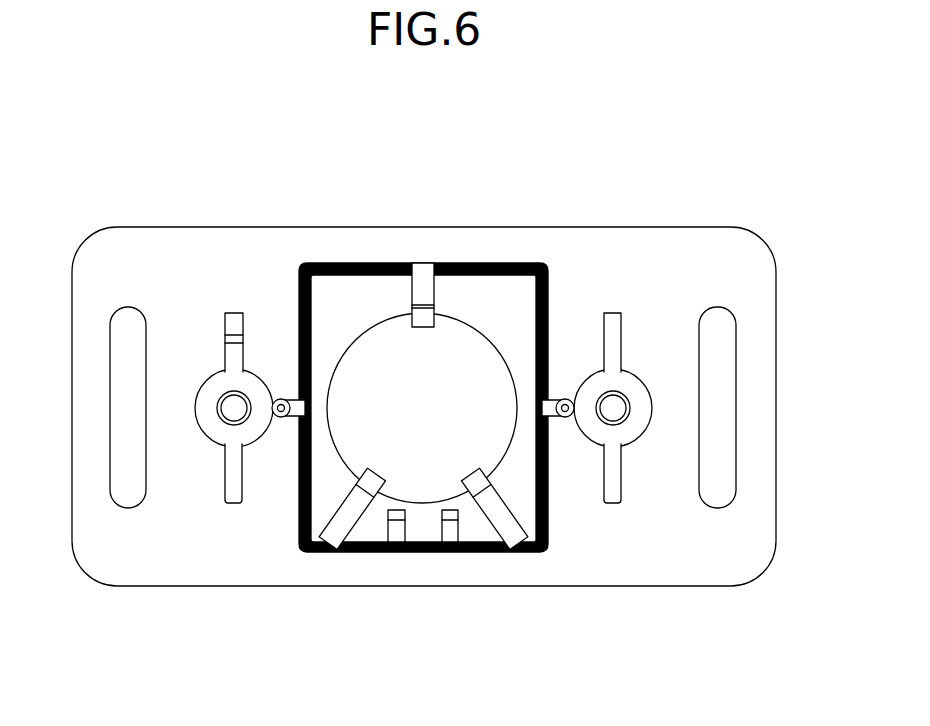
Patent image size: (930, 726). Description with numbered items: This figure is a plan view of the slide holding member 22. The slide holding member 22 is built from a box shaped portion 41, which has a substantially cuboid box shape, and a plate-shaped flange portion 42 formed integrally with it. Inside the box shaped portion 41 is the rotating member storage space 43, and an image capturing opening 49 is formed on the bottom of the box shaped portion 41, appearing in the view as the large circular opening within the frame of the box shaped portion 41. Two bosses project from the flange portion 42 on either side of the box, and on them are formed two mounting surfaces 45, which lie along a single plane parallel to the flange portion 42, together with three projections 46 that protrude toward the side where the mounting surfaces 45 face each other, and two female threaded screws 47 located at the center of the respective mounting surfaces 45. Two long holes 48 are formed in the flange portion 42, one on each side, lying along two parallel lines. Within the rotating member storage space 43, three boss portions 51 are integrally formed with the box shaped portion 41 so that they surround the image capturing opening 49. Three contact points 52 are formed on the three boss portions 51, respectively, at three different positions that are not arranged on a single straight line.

The slide holding member 22 is at (587, 130).
The box shaped portion 41 is at (312, 506).
The flange portion 42 is at (145, 227).
The rotating member storage space 43 is at (497, 282).
The mounting surfaces 45 is at (225, 355).
The projections 46 is at (234, 312).
The female threaded screws 47 is at (232, 408).
The long holes 48 is at (120, 473).
The image capturing opening 49 is at (378, 350).
The boss portions 51 is at (413, 287).
The contact points 52 is at (435, 305).